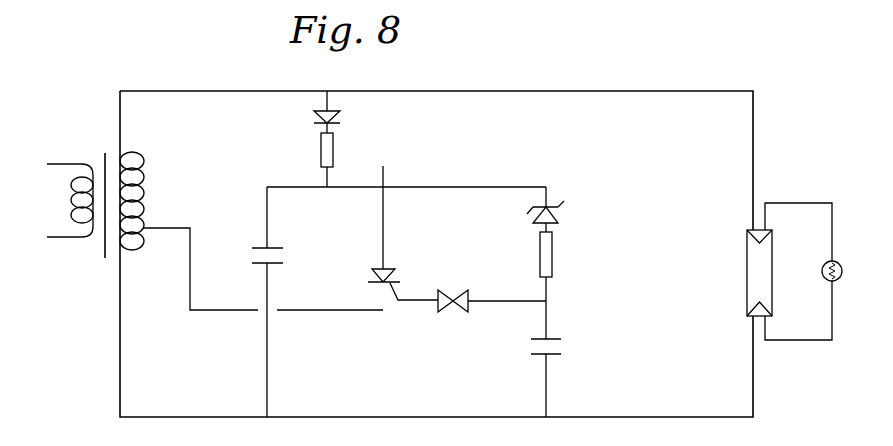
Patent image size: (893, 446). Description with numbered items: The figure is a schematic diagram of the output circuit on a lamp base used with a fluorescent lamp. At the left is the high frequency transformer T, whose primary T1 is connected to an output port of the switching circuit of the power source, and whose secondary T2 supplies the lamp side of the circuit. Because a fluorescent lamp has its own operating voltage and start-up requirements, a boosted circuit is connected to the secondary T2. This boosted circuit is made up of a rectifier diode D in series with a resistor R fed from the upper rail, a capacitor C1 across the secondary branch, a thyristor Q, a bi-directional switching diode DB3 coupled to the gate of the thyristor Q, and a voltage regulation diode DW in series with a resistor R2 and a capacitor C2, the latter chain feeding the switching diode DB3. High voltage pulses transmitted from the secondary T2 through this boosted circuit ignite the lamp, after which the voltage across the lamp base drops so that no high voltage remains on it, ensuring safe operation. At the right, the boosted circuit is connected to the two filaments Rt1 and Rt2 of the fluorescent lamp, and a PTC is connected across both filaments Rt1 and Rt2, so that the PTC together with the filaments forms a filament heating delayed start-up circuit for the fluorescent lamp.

The high frequency transformer T is at (104, 179).
The primary T1 is at (60, 200).
The secondary T2 is at (251, 231).
The rectifier diode D is at (340, 112).
The resistor R is at (343, 160).
The capacitor C1 is at (248, 302).
The thyristor Q is at (403, 233).
The bi-directional switching diode DB3 is at (492, 326).
The voltage regulation diode DW is at (563, 209).
The resistor R2 is at (566, 285).
The capacitor C2 is at (563, 378).
The filament Rt1 is at (732, 273).
The filament Rt2 is at (732, 308).
The element PTC is at (803, 271).